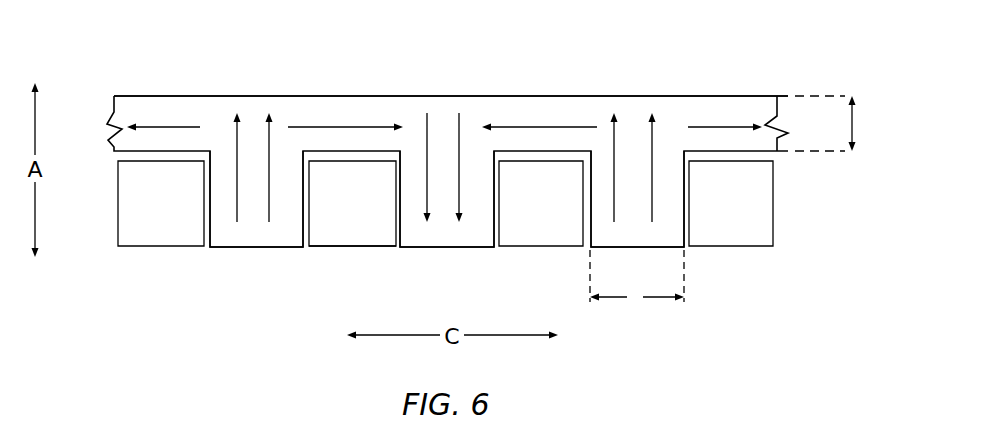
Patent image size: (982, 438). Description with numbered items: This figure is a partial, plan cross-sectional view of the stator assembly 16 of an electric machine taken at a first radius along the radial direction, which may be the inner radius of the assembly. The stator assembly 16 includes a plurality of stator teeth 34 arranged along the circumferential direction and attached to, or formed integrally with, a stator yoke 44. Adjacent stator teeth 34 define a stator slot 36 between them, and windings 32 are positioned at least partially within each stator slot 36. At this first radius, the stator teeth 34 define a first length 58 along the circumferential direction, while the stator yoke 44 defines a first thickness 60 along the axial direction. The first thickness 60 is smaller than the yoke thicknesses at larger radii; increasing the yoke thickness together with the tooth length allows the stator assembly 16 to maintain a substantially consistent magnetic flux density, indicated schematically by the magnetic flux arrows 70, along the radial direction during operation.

The stator assembly 16 is at (782, 46).
The windings 32 is at (358, 229).
The stator teeth 34 is at (440, 232).
The stator slot 36 is at (334, 232).
The stator yoke 44 is at (562, 103).
The first length 58 is at (622, 297).
The first thickness 60 is at (855, 127).
The magnetic flux arrows 70 is at (269, 147).